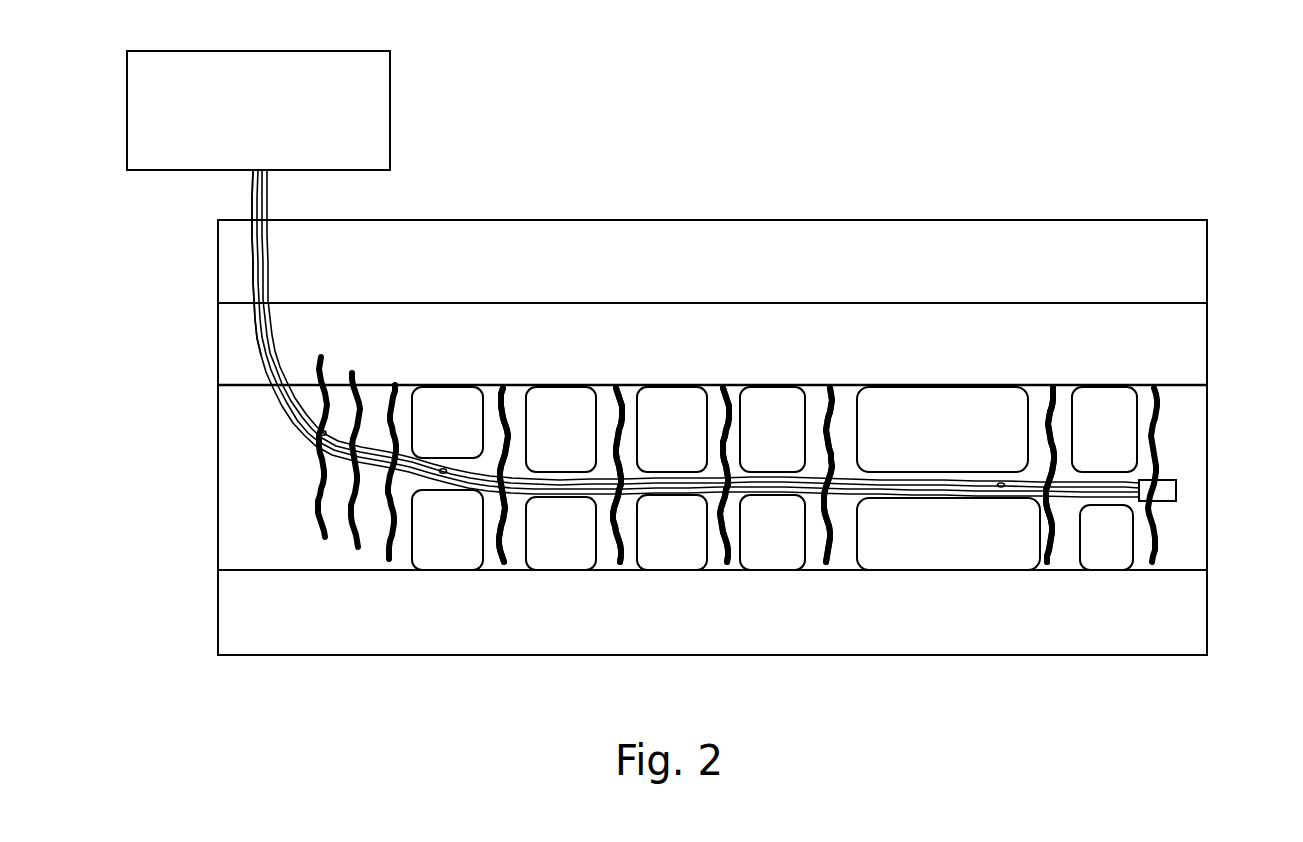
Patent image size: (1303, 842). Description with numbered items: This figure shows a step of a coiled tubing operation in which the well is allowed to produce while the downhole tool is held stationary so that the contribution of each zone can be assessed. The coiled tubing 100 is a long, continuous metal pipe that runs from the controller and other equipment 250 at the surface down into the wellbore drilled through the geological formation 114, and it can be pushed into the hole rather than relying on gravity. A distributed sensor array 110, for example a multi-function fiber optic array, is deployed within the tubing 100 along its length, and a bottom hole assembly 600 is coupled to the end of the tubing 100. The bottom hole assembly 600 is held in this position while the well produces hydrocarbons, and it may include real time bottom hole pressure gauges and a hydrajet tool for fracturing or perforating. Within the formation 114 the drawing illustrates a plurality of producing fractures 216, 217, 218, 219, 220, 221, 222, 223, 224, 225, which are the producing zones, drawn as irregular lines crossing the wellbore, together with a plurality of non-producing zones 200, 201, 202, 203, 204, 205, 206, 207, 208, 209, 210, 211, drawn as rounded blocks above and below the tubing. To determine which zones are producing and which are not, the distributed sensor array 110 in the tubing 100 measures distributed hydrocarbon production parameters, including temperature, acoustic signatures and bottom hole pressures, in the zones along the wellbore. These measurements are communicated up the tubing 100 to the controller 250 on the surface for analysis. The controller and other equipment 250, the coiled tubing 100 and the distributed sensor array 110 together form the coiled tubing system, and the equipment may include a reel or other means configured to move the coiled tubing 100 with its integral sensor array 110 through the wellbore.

The coiled tubing 100 is at (250, 198).
The distributed sensor array 110 is at (258, 207).
The geological formation 114 is at (1207, 331).
The non-producing zone 200 is at (1120, 397).
The non-producing zone 201 is at (970, 397).
The non-producing zone 202 is at (777, 397).
The non-producing zone 203 is at (673, 397).
The non-producing zone 204 is at (568, 397).
The non-producing zone 205 is at (443, 397).
The non-producing zone 206 is at (1123, 558).
The non-producing zone 207 is at (970, 558).
The non-producing zone 208 is at (779, 555).
The non-producing zone 209 is at (671, 555).
The non-producing zone 210 is at (563, 555).
The non-producing zone 211 is at (438, 555).
The fracture 216 is at (1055, 545).
The fracture 217 is at (1063, 395).
The fracture 218 is at (845, 395).
The fracture 219 is at (835, 543).
The fracture 220 is at (731, 562).
The fracture 221 is at (735, 395).
The fracture 222 is at (631, 562).
The fracture 223 is at (630, 395).
The fracture 224 is at (515, 562).
The fracture 225 is at (512, 395).
The controller and other equipment 250 is at (392, 91).
The bottom hole assembly 600 is at (1166, 503).